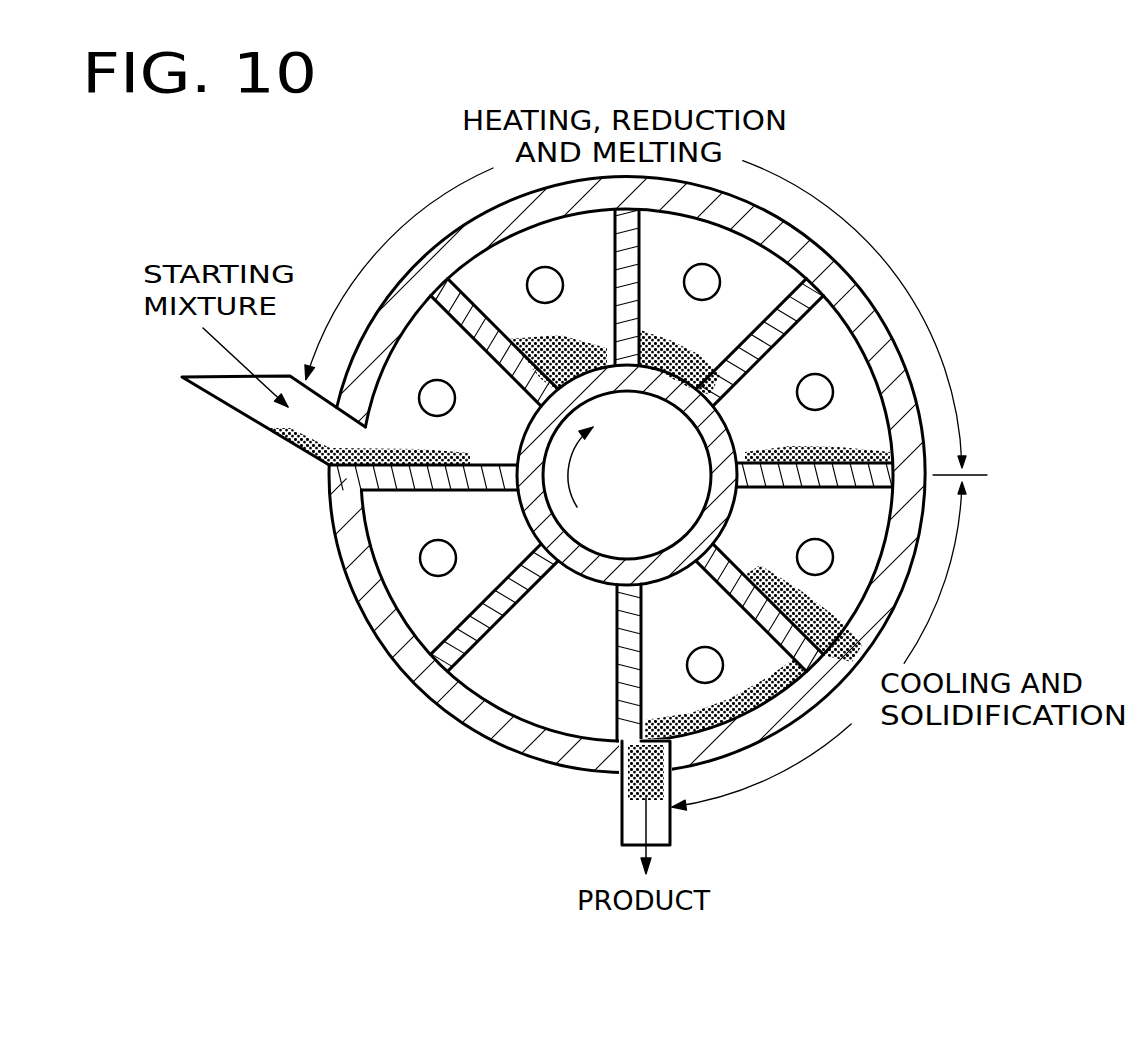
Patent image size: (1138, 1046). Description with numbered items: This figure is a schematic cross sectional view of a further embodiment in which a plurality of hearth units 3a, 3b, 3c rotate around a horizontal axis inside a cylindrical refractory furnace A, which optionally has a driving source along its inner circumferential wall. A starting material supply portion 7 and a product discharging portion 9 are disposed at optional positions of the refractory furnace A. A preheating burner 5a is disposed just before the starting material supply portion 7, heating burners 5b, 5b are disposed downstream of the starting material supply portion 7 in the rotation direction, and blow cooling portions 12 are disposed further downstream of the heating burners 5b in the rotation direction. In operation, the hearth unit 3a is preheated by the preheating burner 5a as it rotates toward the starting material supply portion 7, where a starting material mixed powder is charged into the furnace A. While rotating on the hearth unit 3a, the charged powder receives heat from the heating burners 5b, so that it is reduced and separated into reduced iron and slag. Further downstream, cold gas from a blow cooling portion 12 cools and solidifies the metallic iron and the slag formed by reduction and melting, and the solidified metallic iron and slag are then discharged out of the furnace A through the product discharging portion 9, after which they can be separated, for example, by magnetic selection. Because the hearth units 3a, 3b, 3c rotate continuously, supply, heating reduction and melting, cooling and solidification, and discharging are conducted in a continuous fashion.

The hearth unit 3a is at (395, 491).
The hearth unit 3b is at (491, 352).
The hearth unit 3c is at (639, 243).
The preheating burner 5a is at (455, 556).
The heating burner 5b is at (527, 285).
The starting material supply portion 7 is at (265, 428).
The product discharging portion 9 is at (670, 833).
The blow cooling portion 12 is at (829, 546).
The cylindrical refractory furnace A is at (833, 275).